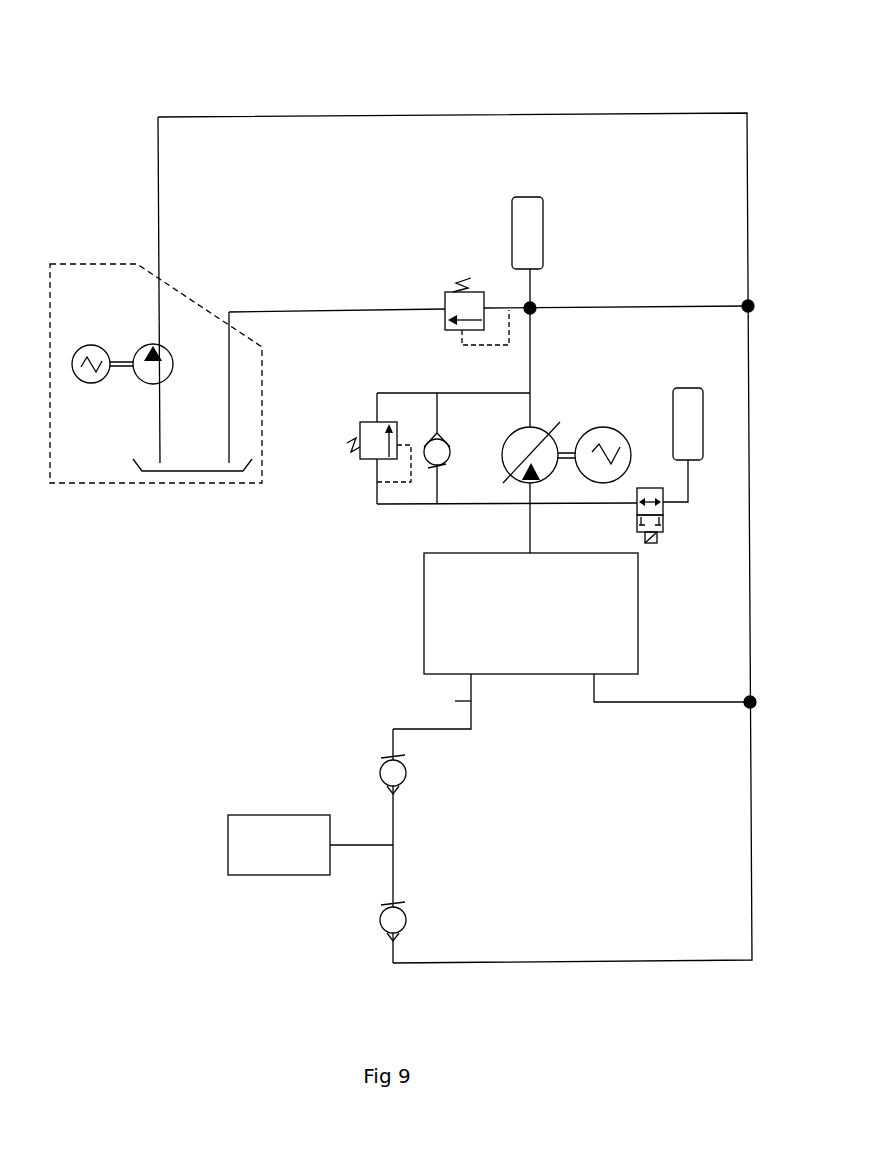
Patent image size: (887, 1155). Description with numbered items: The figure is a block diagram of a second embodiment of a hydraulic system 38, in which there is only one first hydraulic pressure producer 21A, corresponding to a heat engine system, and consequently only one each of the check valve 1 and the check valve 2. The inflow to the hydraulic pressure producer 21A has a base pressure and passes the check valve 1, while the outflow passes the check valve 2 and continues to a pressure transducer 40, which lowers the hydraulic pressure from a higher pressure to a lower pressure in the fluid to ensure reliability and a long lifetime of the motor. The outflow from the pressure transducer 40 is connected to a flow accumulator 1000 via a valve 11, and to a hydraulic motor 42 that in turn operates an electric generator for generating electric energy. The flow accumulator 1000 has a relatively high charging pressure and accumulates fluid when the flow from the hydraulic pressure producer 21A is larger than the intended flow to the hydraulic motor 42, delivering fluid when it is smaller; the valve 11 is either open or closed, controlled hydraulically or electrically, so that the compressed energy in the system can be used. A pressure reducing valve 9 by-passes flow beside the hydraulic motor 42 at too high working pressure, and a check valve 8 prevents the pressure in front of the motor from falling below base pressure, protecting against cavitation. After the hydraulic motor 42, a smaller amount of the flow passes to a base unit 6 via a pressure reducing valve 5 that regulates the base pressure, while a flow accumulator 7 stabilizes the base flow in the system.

The hydraulic system 38 is at (125, 54).
The base unit 6 is at (262, 468).
The flow accumulator 7 is at (537, 247).
The pressure reducing valve 5 is at (445, 298).
The pressure reducing valve 9 is at (362, 459).
The check valve 8 is at (446, 447).
The hydraulic motor 42 is at (545, 468).
The flow accumulator 1000 is at (676, 401).
The valve 11 is at (663, 528).
The pressure transducer 40 is at (638, 612).
The first hydraulic pressure producer 21A is at (228, 845).
The check valve 2 is at (400, 781).
The check valve 1 is at (400, 928).